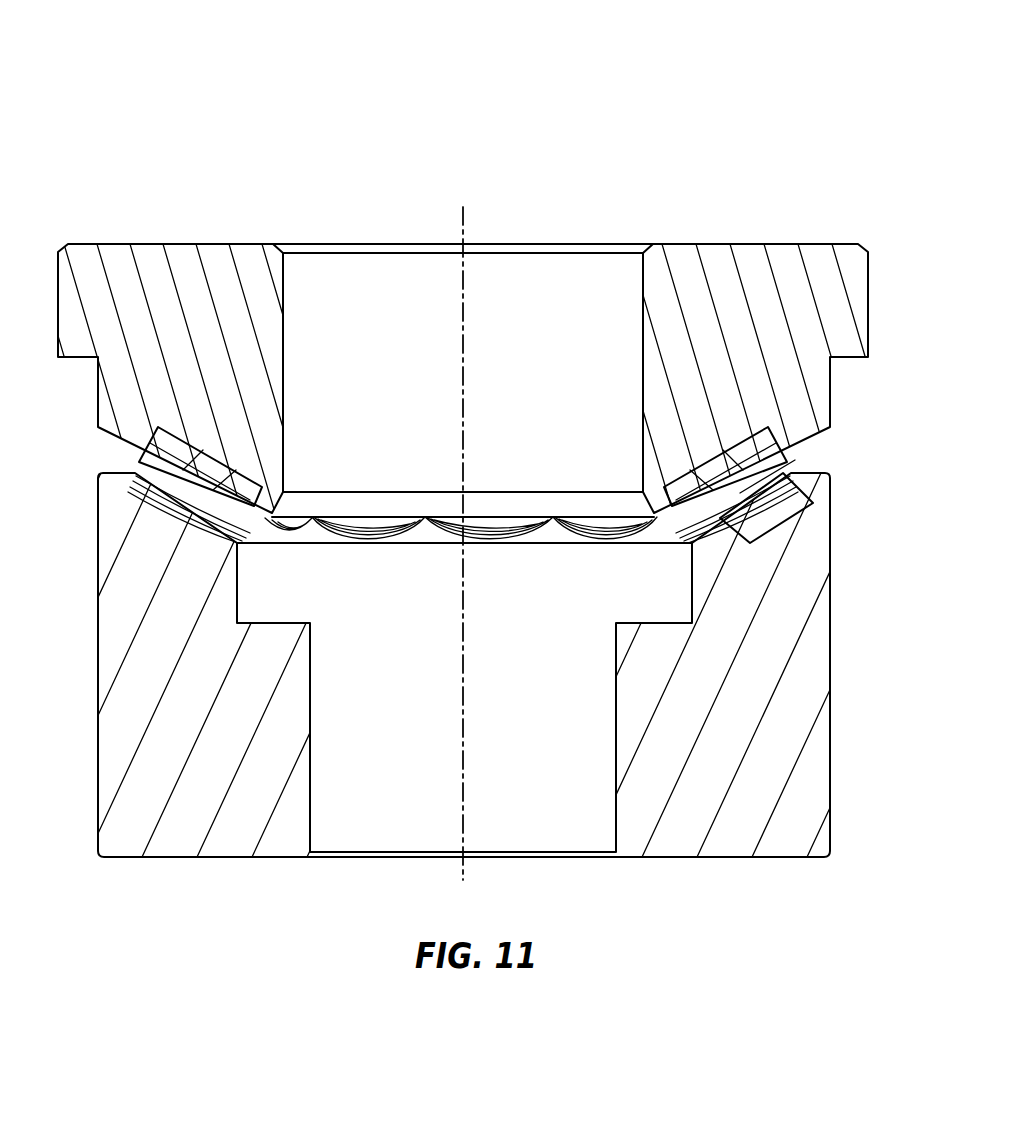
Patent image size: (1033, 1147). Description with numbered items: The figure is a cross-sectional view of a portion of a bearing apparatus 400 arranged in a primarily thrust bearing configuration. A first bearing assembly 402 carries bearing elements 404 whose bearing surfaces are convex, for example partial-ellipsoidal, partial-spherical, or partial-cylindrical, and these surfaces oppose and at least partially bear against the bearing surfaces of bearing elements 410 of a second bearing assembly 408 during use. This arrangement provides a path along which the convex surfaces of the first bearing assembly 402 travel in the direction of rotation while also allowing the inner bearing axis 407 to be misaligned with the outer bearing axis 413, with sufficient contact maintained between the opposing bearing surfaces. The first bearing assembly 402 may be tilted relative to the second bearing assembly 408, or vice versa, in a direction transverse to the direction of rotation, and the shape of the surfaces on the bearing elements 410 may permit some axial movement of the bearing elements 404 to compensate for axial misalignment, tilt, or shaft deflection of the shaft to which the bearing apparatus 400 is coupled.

The bearing apparatus 400 is at (203, 98).
The first bearing assembly 402 is at (792, 287).
The bearing elements 404 is at (148, 442).
The inner bearing axis 407 is at (468, 228).
The second bearing assembly 408 is at (797, 797).
The bearing elements 410 is at (147, 505).
The outer bearing axis 413 is at (468, 228).